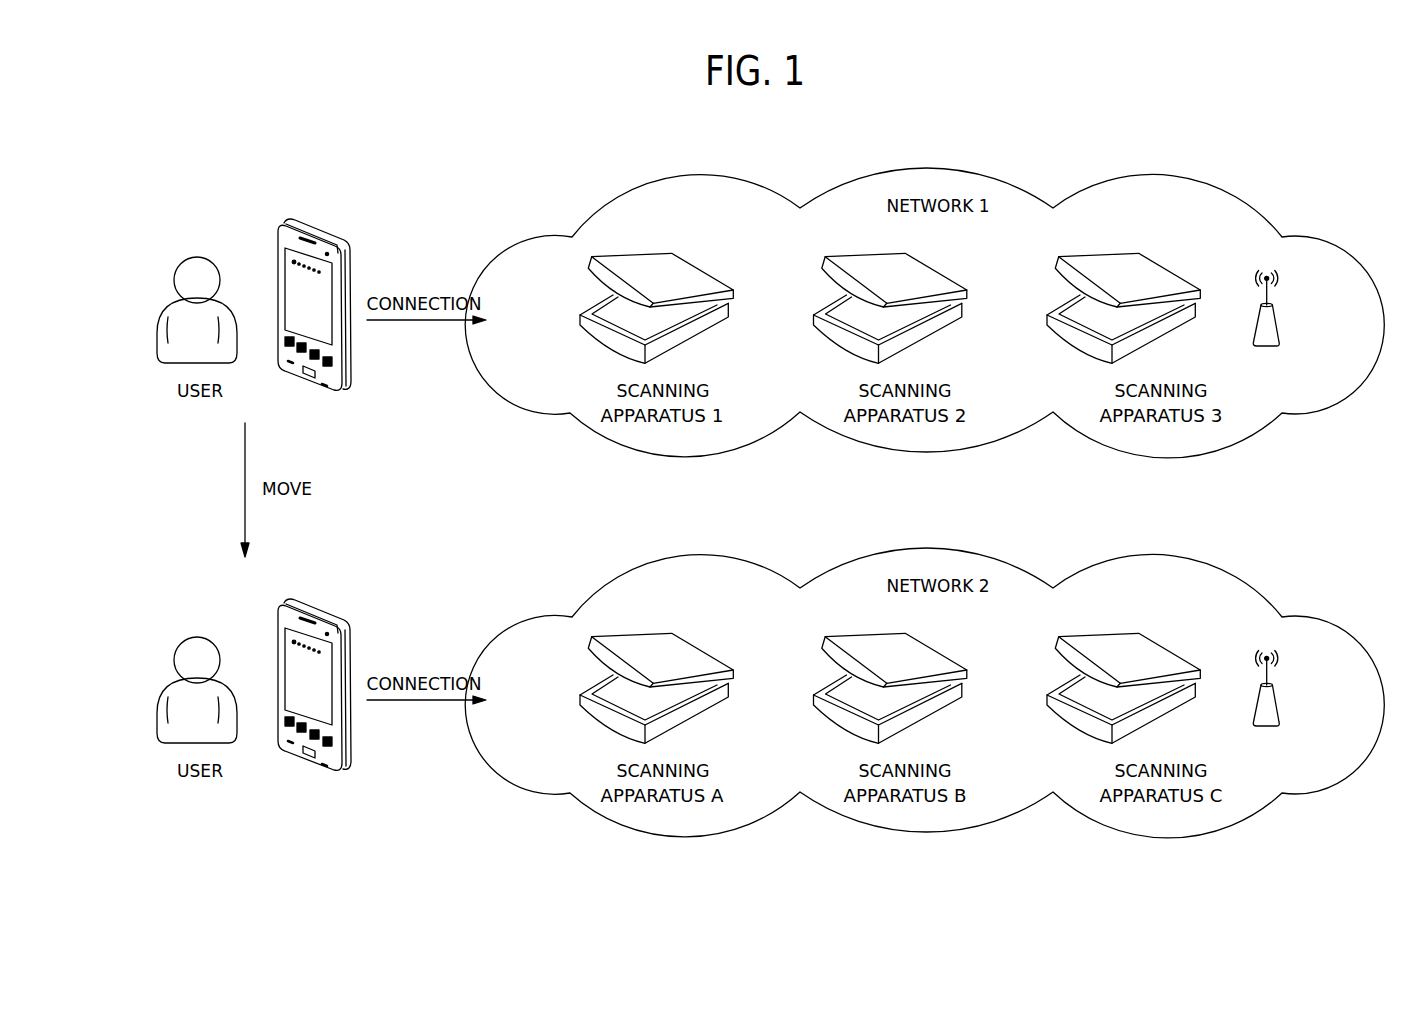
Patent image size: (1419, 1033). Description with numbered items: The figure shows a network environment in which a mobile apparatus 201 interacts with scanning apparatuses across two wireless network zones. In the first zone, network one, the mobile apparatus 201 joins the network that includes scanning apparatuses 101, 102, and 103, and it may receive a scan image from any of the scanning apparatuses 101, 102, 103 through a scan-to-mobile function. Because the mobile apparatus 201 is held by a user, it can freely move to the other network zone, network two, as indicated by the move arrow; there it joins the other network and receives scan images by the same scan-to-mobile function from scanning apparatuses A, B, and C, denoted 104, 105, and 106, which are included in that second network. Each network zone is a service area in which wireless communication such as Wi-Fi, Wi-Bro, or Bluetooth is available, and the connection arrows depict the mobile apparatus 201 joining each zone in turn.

The scanning apparatus 101 is at (653, 260).
The scanning apparatus 102 is at (867, 260).
The scanning apparatus 103 is at (1112, 260).
The scanning apparatus A 104 is at (653, 640).
The scanning apparatus B 105 is at (867, 640).
The scanning apparatus C 106 is at (1112, 640).
The mobile apparatus 201 is at (287, 222).